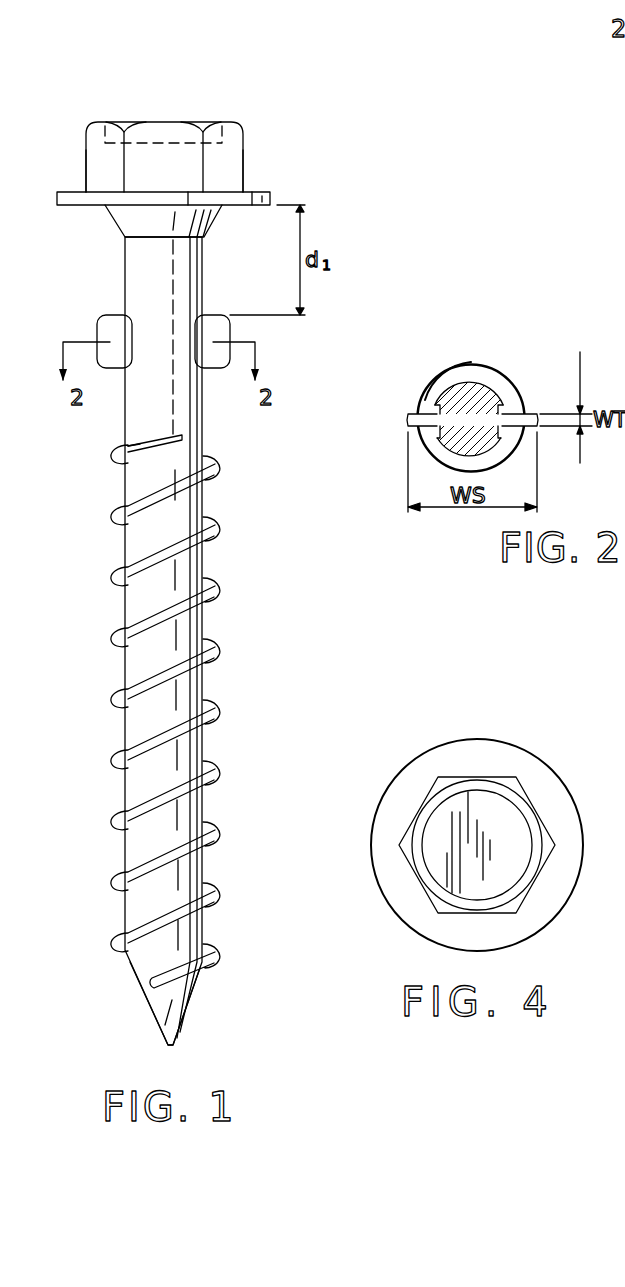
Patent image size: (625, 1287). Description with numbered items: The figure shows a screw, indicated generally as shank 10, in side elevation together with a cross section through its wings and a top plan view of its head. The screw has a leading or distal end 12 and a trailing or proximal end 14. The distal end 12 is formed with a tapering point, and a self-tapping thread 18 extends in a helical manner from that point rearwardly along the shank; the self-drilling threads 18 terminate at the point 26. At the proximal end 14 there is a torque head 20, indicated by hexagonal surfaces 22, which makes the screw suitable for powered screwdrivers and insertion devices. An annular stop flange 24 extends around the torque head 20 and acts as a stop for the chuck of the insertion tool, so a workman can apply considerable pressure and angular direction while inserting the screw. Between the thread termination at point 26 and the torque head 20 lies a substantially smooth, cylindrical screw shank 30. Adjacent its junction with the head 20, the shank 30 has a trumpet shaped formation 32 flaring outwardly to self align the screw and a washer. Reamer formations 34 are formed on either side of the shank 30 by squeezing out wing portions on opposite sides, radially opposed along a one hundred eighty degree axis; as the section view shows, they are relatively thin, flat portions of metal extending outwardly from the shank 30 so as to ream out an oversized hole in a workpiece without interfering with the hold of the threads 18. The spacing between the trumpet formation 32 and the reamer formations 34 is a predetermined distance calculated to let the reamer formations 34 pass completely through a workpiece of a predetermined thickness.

In FIG. 1, the shank 10 is at (256, 664).
In FIG. 1, the leading or distal end 12 is at (210, 1010).
In FIG. 1, the trailing or proximal end 14 is at (268, 173).
In FIG. 1, the self-tapping thread 18 is at (222, 893).
In FIG. 1, the torque head 20 is at (130, 122).
In FIG. 4, the torque head 20 is at (478, 815).
In FIG. 1, the hexagonal surfaces 22 is at (100, 158).
In FIG. 4, the hexagonal surfaces 22 is at (425, 803).
In FIG. 1, the annular stop flange 24 is at (268, 192).
In FIG. 4, the annular stop flange 24 is at (455, 742).
In FIG. 1, the point 26 is at (110, 457).
In FIG. 1, the cylindrical screw shank 30 is at (205, 395).
In FIG. 2, the cylindrical screw shank 30 is at (476, 400).
In FIG. 1, the trumpet shaped formation 32 is at (210, 240).
In FIG. 1, the reamer formations 34 is at (110, 320).
In FIG. 2, the reamer formations 34 is at (420, 414).